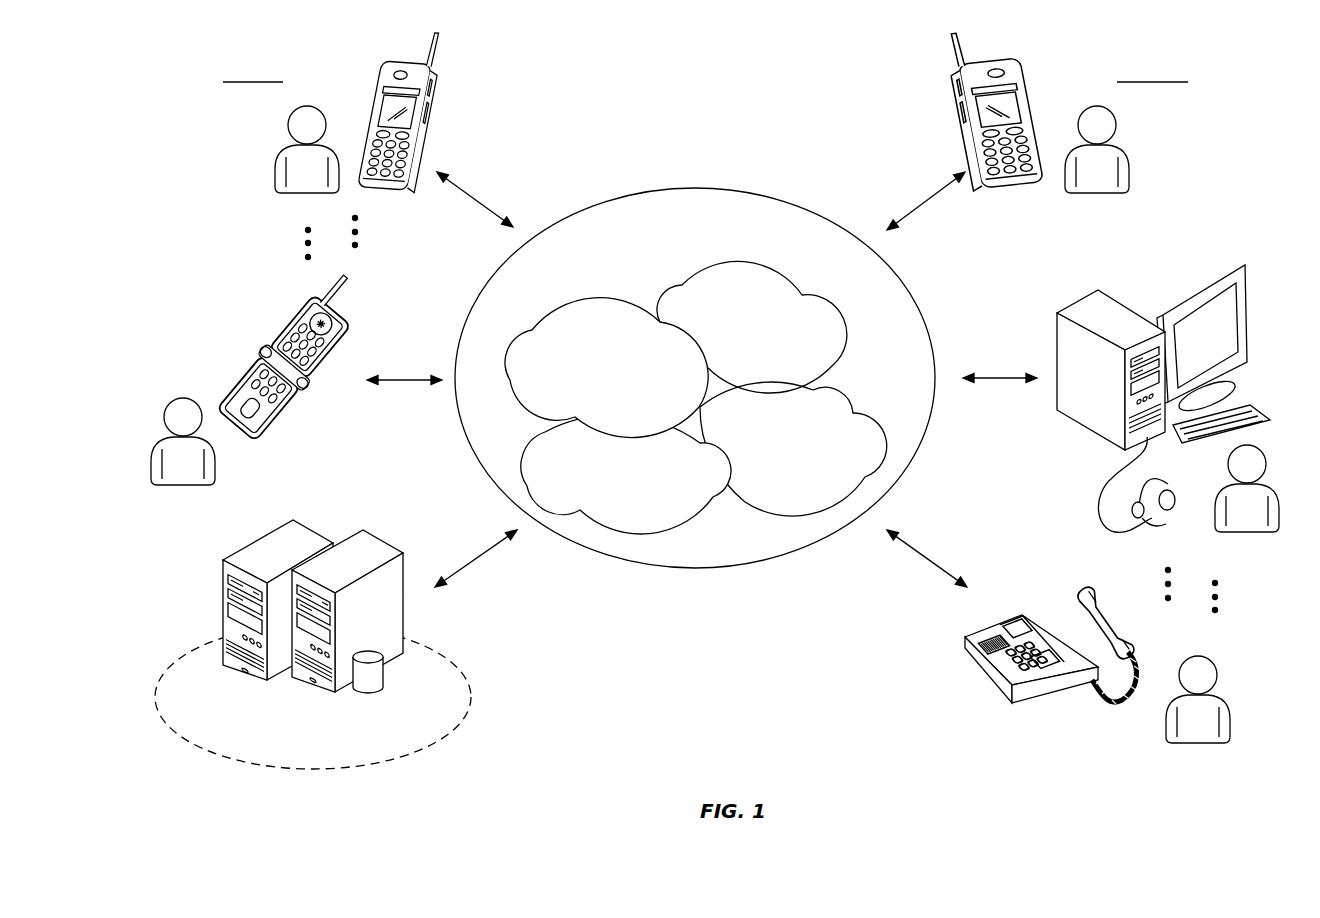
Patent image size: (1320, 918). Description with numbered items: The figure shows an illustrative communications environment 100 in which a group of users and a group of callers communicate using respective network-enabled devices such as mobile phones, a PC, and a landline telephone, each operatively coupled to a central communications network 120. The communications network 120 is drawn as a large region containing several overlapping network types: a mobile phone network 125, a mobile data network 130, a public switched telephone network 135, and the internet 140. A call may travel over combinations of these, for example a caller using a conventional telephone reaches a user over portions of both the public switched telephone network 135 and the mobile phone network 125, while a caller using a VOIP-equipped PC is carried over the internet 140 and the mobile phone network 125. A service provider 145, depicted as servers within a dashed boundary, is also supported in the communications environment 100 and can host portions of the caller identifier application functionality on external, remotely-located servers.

The communications environment 100 is at (663, 73).
The communications network 120 is at (703, 188).
The mobile phone network 125 is at (597, 300).
The mobile data network 130 is at (820, 293).
The public switched telephone network 135 is at (708, 513).
The internet 140 is at (858, 411).
The service provider 145 is at (470, 697).